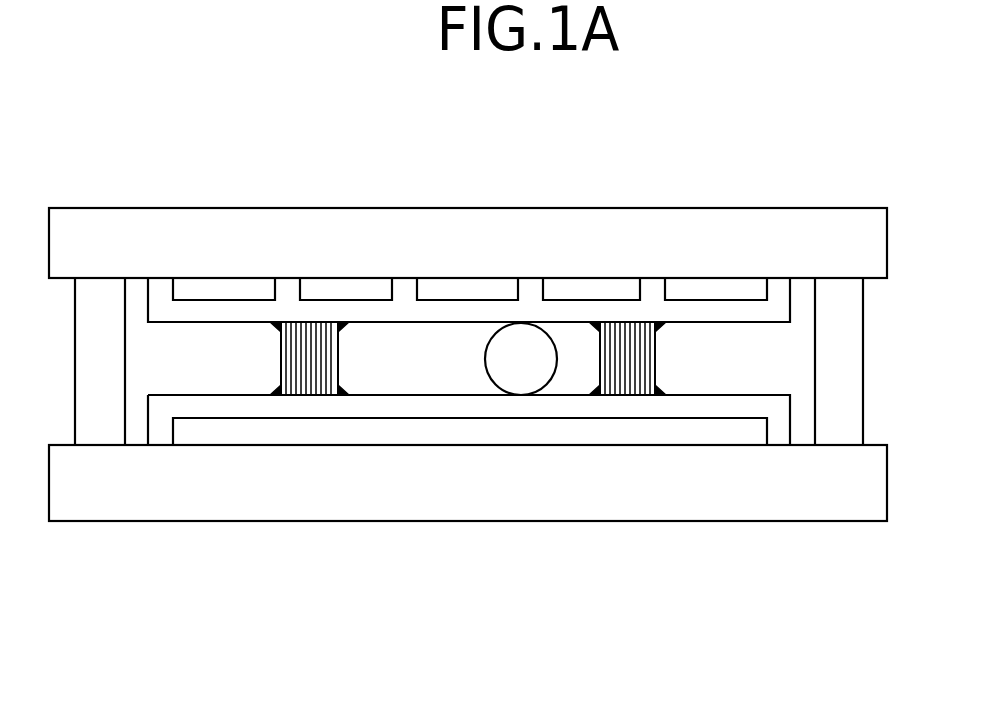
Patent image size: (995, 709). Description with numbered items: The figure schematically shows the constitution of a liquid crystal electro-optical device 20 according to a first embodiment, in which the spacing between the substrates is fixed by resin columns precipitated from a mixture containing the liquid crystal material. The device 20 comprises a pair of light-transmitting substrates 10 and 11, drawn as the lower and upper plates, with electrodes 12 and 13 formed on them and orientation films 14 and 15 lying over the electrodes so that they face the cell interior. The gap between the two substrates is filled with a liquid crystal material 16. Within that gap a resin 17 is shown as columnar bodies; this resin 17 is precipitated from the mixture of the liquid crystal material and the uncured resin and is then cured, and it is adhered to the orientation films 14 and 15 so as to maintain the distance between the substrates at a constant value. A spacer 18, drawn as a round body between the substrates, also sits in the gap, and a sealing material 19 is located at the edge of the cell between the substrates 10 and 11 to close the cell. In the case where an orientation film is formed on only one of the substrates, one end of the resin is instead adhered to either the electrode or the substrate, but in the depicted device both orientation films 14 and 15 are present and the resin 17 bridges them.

The light-transmitting substrate 10 is at (233, 498).
The light-transmitting substrate 11 is at (566, 238).
The electrode 12 is at (437, 432).
The electrode 13 is at (202, 287).
The orientation film 14 is at (634, 408).
The orientation film 15 is at (463, 235).
The liquid crystal material 16 is at (388, 343).
The resin 17 is at (306, 392).
The spacer 18 is at (526, 370).
The sealing material 19 is at (115, 432).
The liquid crystal electro-optical device 20 is at (769, 151).